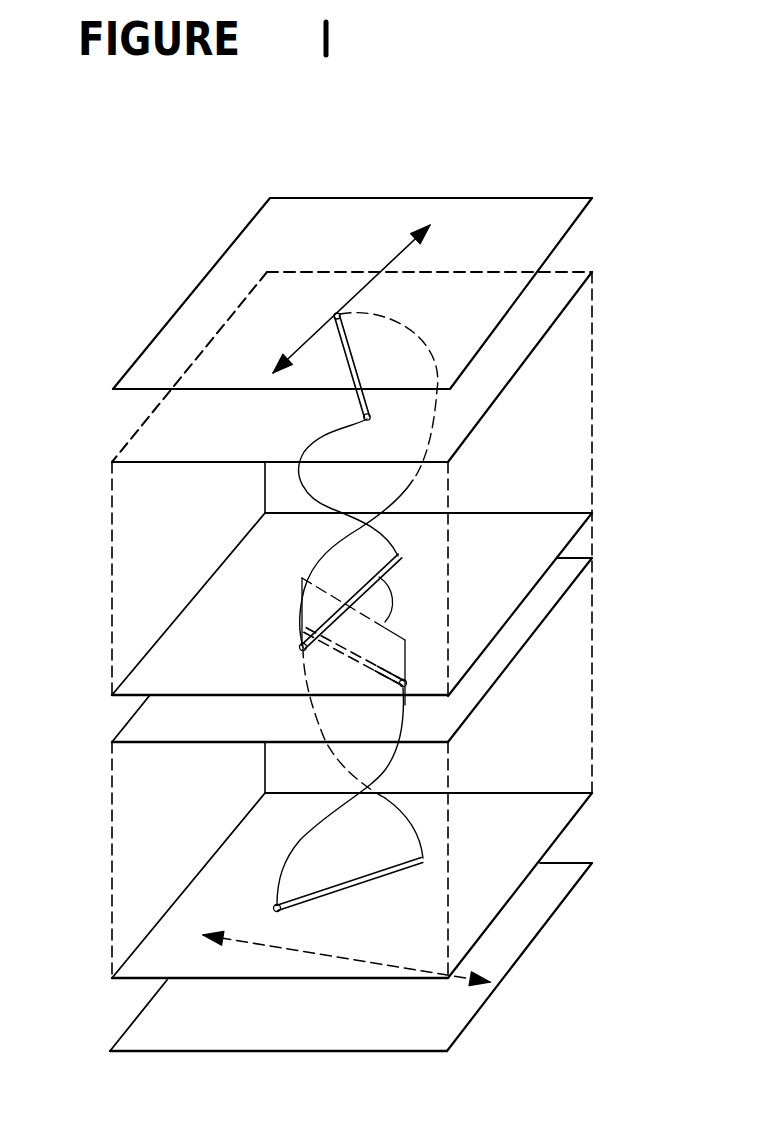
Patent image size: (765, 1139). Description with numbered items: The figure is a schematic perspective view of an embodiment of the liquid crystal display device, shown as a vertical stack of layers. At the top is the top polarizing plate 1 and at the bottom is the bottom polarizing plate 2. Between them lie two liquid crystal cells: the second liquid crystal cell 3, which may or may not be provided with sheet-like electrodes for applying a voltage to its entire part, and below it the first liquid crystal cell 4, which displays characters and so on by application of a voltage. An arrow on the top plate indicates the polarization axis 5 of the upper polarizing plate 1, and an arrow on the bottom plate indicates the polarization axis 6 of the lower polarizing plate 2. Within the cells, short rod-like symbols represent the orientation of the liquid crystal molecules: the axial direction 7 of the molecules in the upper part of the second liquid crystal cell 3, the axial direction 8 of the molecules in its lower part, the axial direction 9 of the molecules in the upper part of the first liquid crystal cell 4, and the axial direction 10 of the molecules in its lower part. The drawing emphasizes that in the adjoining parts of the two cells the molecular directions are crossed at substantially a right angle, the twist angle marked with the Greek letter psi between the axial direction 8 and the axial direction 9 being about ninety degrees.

The top polarizing plate 1 is at (185, 301).
The bottom polarizing plate 2 is at (330, 1052).
The second liquid crystal cell 3 is at (100, 463).
The first liquid crystal cell 4 is at (100, 750).
The polarization axis of the upper polarizing plate 5 is at (404, 257).
The polarization axis of the lower polarizing plate 6 is at (460, 978).
The axial direction of liquid crystal molecules in the upper part of the second liqu 7 is at (368, 367).
The axial direction of liquid crystal molecules in the lower part of the second liqu 8 is at (400, 558).
The axial direction of liquid crystal molecules in the upper part of the first liqui 9 is at (365, 668).
The axial direction of liquid crystal molecules in the lower part of the first liqui 10 is at (388, 882).